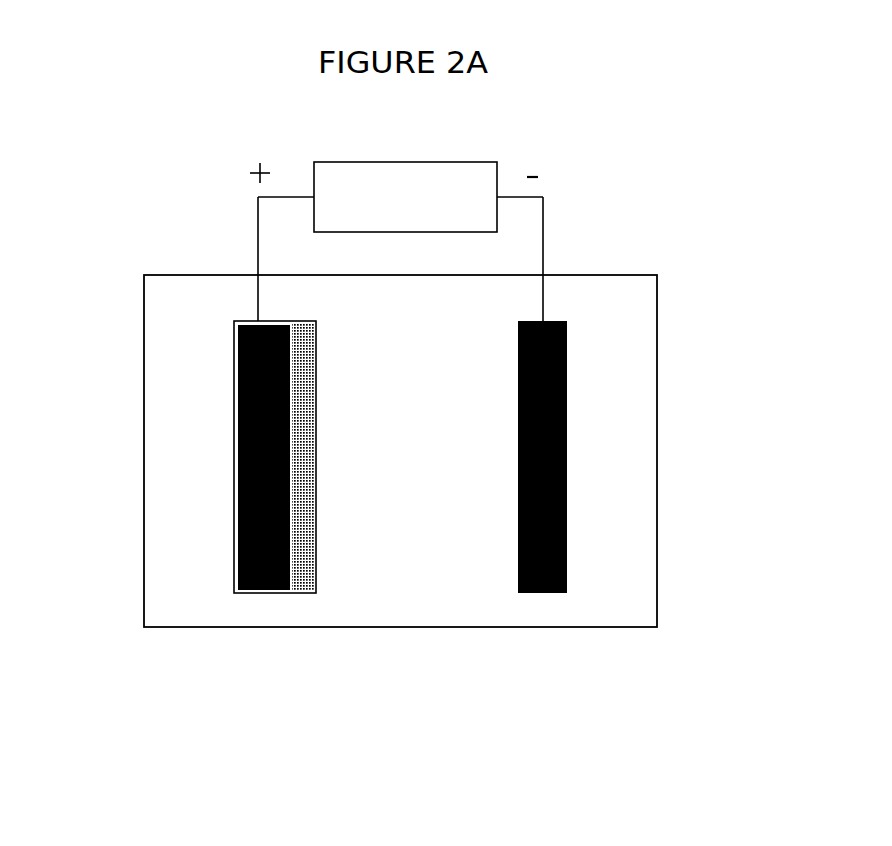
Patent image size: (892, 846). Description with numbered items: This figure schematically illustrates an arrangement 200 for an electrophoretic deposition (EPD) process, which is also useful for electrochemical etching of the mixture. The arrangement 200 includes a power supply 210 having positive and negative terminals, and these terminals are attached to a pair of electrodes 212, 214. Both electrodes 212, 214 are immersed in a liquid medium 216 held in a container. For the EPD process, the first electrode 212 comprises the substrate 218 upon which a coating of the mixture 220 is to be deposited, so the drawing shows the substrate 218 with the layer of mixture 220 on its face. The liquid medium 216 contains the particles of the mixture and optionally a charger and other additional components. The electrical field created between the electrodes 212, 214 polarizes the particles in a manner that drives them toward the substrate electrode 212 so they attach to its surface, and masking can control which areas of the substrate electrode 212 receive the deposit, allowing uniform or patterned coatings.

The arrangement 200 is at (636, 183).
The power supply 210 is at (395, 172).
The electrode 212 is at (225, 482).
The electrode 214 is at (578, 525).
The liquid medium 216 is at (622, 452).
The substrate 218 is at (279, 573).
The mixture 220 is at (328, 601).